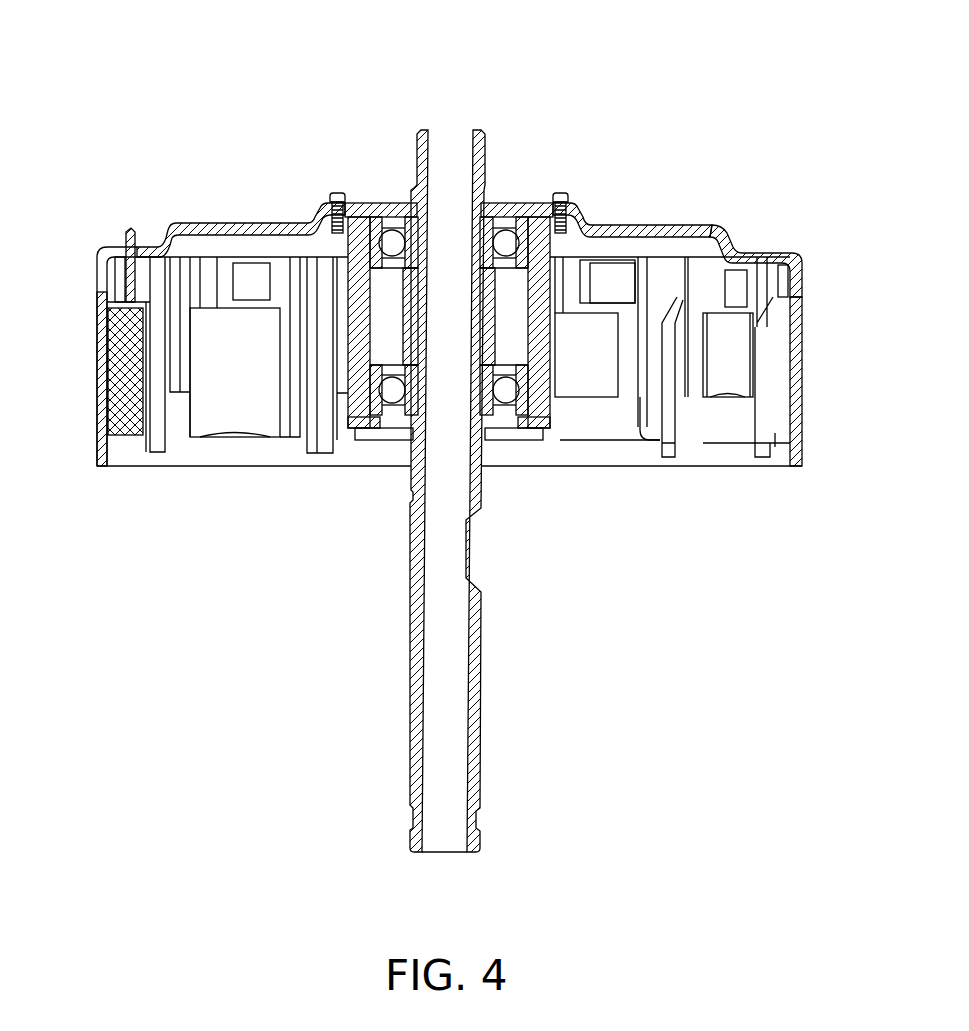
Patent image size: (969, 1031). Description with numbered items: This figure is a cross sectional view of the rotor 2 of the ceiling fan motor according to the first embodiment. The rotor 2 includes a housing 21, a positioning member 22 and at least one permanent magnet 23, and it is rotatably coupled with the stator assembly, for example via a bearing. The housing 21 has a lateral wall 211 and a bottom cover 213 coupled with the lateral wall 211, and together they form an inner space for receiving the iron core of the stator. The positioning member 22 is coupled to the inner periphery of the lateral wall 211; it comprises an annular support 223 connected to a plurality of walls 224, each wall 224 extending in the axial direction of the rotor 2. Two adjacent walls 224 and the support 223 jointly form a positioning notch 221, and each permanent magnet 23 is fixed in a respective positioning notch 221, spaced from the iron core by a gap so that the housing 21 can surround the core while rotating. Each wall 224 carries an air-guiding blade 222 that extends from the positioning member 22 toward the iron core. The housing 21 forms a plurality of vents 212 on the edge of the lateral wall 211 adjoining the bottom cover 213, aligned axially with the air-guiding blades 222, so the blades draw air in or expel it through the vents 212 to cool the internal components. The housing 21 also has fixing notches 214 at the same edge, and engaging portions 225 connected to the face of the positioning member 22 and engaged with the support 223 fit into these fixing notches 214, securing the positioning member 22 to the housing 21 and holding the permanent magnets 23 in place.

The rotor 2 is at (758, 122).
The housing 21 is at (491, 356).
The lateral wall 211 is at (797, 393).
The vents 212 is at (777, 257).
The bottom cover 213 is at (639, 245).
The fixing notches 214 is at (107, 257).
The positioning member 22 is at (296, 433).
The positioning notch 221 is at (152, 398).
The air-guiding blade 222 is at (775, 433).
The support 223 is at (115, 282).
The walls 224 is at (697, 387).
The engaging portions 225 is at (127, 232).
The permanent magnet 23 is at (126, 417).